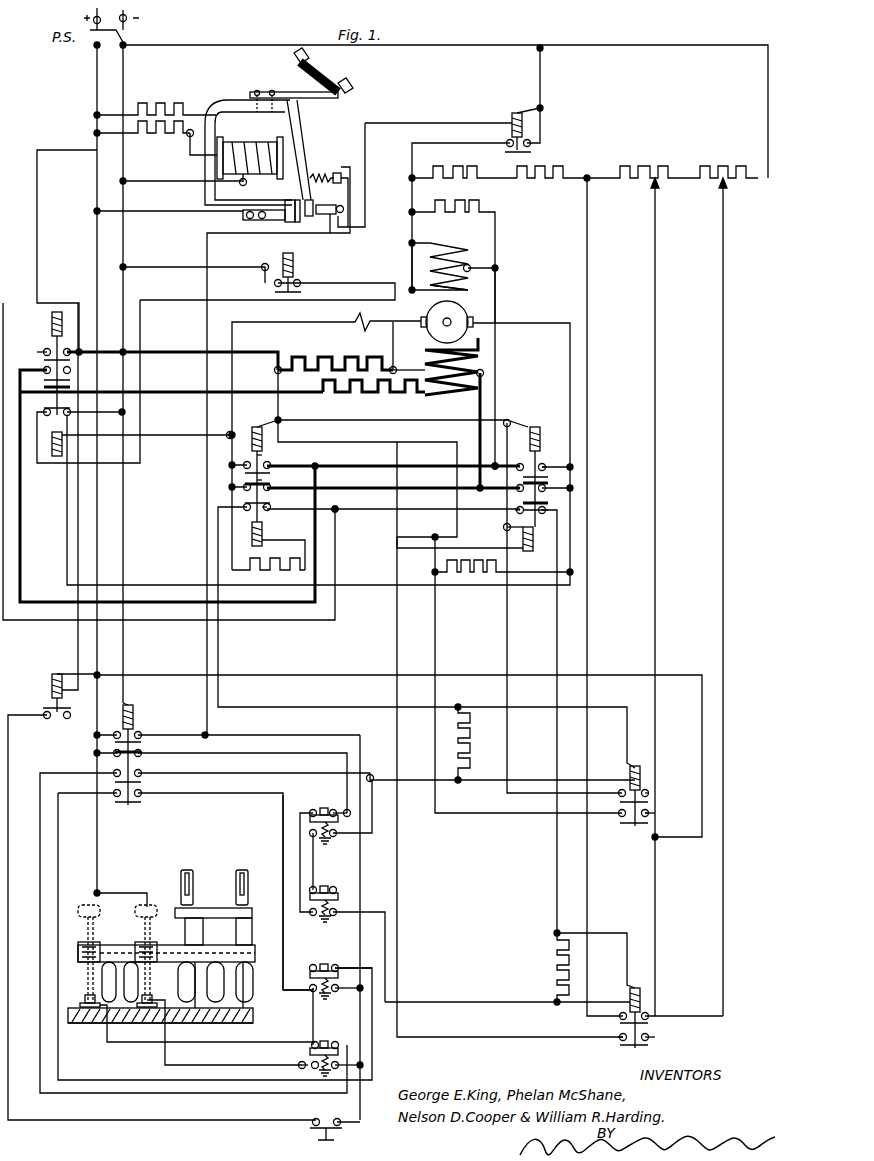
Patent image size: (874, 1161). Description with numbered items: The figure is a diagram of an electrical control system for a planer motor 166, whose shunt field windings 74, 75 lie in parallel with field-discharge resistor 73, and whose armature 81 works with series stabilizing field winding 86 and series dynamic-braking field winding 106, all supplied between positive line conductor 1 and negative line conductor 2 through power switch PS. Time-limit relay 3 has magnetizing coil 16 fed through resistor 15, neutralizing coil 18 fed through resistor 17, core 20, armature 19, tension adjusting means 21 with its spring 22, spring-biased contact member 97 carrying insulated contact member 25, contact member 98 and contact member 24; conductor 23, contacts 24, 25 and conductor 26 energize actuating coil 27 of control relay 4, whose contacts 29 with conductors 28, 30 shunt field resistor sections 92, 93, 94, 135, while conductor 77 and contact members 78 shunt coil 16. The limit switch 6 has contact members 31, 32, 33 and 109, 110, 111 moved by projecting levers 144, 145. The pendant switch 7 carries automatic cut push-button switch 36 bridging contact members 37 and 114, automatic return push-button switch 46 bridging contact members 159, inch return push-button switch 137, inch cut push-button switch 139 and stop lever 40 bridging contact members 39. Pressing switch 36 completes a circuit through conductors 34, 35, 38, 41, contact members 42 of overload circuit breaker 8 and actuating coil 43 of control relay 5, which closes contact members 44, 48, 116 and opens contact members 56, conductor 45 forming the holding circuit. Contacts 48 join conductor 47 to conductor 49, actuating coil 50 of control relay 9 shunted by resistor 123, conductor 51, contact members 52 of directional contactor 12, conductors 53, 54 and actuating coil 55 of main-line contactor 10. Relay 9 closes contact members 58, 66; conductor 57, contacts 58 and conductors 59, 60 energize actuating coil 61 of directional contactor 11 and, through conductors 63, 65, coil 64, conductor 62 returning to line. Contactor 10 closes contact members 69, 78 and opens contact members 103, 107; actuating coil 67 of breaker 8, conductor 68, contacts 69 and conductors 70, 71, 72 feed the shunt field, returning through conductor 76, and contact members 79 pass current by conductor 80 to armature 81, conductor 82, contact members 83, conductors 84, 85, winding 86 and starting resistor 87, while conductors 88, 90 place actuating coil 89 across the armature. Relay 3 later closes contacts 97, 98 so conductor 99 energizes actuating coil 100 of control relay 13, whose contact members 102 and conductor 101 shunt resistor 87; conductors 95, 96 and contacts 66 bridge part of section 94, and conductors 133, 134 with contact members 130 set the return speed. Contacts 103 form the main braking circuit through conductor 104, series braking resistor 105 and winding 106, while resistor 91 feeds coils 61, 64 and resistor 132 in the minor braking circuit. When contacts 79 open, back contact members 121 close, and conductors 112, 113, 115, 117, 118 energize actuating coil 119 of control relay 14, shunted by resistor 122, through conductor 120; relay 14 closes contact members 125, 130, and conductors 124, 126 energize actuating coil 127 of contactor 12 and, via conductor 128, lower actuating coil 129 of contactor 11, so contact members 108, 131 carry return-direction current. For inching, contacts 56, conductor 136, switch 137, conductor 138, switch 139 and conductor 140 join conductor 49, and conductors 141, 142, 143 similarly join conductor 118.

The positive line conductor 1 is at (94, 72).
The negative line conductor 2 is at (126, 74).
The time-limit relay 3 is at (328, 141).
The control relay 4 is at (496, 116).
The control relay 5 is at (156, 718).
The plug apparatus 6 is at (214, 901).
The relay 7 is at (301, 938).
The overload circuit breaker 8 is at (32, 698).
The control relay 9 is at (614, 775).
The main-line contactor relay 10 is at (86, 318).
The directional contactor 11 is at (564, 500).
The directional contactor 12 is at (298, 485).
The control relay 13 is at (312, 266).
The control relay 14 is at (608, 996).
The resistor 15 is at (160, 138).
The magnetizing coil 16 is at (243, 184).
The resistor 17 is at (152, 106).
The neutralizing coil 18 is at (260, 134).
The armature 19 is at (304, 120).
The core 20 is at (248, 98).
The tension adjusting means 21 is at (340, 84).
The spring 22 is at (324, 172).
The conductor 23 is at (174, 211).
The contact member 24 is at (243, 222).
The insulated contact member 25 is at (295, 200).
The conductor 26 is at (366, 176).
The actuating coil 27 is at (542, 108).
The conductor 28 is at (472, 126).
The contact members 29 is at (537, 138).
The conductor 30 is at (550, 81).
The contact member 31 is at (86, 906).
The contact member 32 is at (78, 946).
The contact member 33 is at (84, 996).
The conductor 34 is at (228, 1026).
The conductor 35 is at (306, 1018).
The automatic cut push-button switch 36 is at (324, 958).
The contact members 37 is at (310, 986).
The conductor 38 is at (354, 997).
The contact members 39 is at (324, 1120).
The stop lever 40 is at (318, 1132).
The conductor 41 is at (224, 1122).
The contact members 42 is at (46, 720).
The actuating coil 43 is at (136, 702).
The contact members 44 is at (144, 734).
The conductor 45 is at (206, 242).
The automatic return push-button switch 46 is at (330, 1041).
The conductor 47 is at (40, 800).
The contact members 48 is at (142, 772).
The conductor 49 is at (406, 778).
The actuating coil 50 is at (646, 776).
The conductor 51 is at (308, 704).
The contact members 52 is at (273, 512).
The conductor 53 is at (442, 515).
The conductor 54 is at (10, 350).
The actuating coil 55 is at (60, 312).
The contact members 56 is at (114, 755).
The conductor 57 is at (180, 674).
The contact members 58 is at (650, 813).
The conductor 59 is at (435, 652).
The conductor 60 is at (458, 528).
The actuating coil 61 is at (536, 426).
The conductor 62 is at (404, 426).
The conductor 63 is at (338, 536).
The coil 64 is at (252, 548).
The conductor 65 is at (282, 439).
The contact members 66 is at (650, 793).
The actuating coil 67 is at (48, 672).
The conductor 68 is at (78, 537).
The contact members 69 is at (68, 354).
The conductor 70 is at (20, 560).
The conductor 71 is at (440, 473).
The conductor 72 is at (495, 364).
The field-discharge resistor 73 is at (470, 200).
The shunt field winding 74 is at (460, 246).
The shunt field winding 75 is at (462, 286).
The conductor 76 is at (412, 260).
The conductor 77 is at (48, 150).
The contact members 78 is at (44, 350).
The contact members 79 is at (544, 465).
The conductor 80 is at (550, 323).
The armature 81 is at (476, 308).
The conductor 82 is at (355, 318).
The contact members 83 is at (277, 494).
The conductor 84 is at (440, 493).
The conductor 85 is at (484, 398).
The series stabilizing field winding 86 is at (478, 350).
The starting resistor 87 is at (327, 358).
The conductor 88 is at (438, 600).
The actuating coil 89 is at (62, 442).
The conductor 90 is at (180, 436).
The resistor 91 is at (470, 584).
The field resistor section 92 is at (460, 168).
The field resistor section 93 is at (546, 168).
The field resistor section 94 is at (638, 166).
The conductor 95 is at (656, 440).
The conductor 96 is at (508, 622).
The spring-biased contact member 97 is at (318, 204).
The terminal binding post or contact member 98 is at (343, 228).
The conductor 99 is at (331, 236).
The actuating coil 100 is at (278, 262).
The conductor 101 is at (393, 350).
The contact members 102 is at (304, 283).
The contact members 103 is at (54, 396).
The conductor 104 is at (183, 401).
The series braking resistor 105 is at (360, 394).
The series dynamic-braking field winding 106 is at (432, 400).
The contact members 107 is at (39, 462).
The contact members 108 is at (516, 490).
The contact member 109 is at (147, 896).
The contact member 110 is at (154, 968).
The contact member 111 is at (152, 998).
The conductor 112 is at (220, 1066).
The conductor 113 is at (282, 993).
The contact member 114 is at (340, 943).
The conductor 115 is at (80, 1080).
The contact members 116 is at (140, 792).
The conductor 117 is at (218, 800).
The conductor 118 is at (454, 1001).
The actuating coil 119 is at (634, 986).
The conductor 120 is at (557, 868).
The back contact members 121 is at (516, 512).
The shunt resistor 122 is at (556, 970).
The shunt resistor 123 is at (472, 738).
The conductor 124 is at (654, 1034).
The contact members 125 is at (618, 1036).
The conductor 126 is at (498, 1036).
The actuating coil 127 is at (254, 420).
The conductor 128 is at (434, 548).
The lower actuating coil 129 is at (534, 553).
The contact members 130 is at (648, 1013).
The contact members 131 is at (284, 461).
The resistor 132 is at (288, 585).
The wire 133 is at (588, 211).
The conductor 134 is at (724, 513).
The field resistor section 135 is at (718, 166).
The conductor 136 is at (360, 866).
The inch return push-button switch 137 is at (326, 884).
The conductor 138 is at (313, 860).
The inch cut push-button switch 139 is at (316, 810).
The conductor 140 is at (360, 838).
The contact 141 is at (346, 808).
The wire 142 is at (300, 822).
The conductor 143 is at (374, 910).
The projecting lever 144 is at (250, 865).
The projecting lever 145 is at (186, 870).
The contact members 159 is at (300, 1062).
The motor 166 is at (526, 295).